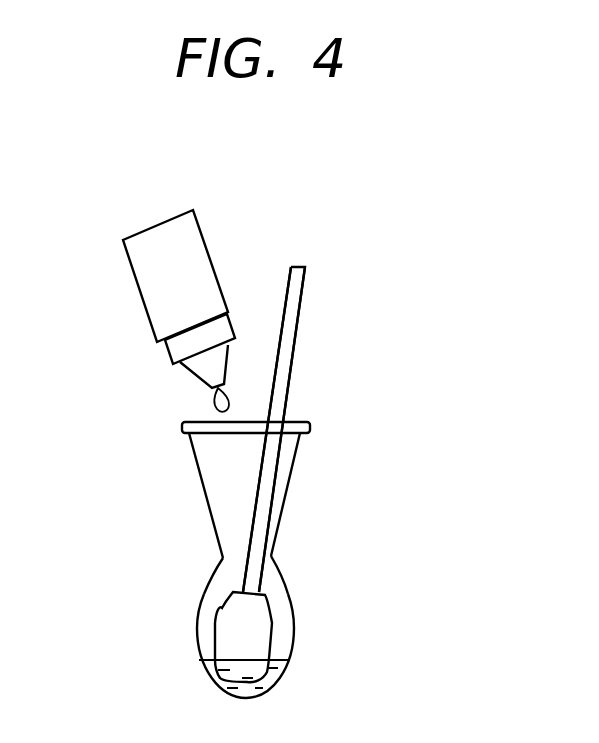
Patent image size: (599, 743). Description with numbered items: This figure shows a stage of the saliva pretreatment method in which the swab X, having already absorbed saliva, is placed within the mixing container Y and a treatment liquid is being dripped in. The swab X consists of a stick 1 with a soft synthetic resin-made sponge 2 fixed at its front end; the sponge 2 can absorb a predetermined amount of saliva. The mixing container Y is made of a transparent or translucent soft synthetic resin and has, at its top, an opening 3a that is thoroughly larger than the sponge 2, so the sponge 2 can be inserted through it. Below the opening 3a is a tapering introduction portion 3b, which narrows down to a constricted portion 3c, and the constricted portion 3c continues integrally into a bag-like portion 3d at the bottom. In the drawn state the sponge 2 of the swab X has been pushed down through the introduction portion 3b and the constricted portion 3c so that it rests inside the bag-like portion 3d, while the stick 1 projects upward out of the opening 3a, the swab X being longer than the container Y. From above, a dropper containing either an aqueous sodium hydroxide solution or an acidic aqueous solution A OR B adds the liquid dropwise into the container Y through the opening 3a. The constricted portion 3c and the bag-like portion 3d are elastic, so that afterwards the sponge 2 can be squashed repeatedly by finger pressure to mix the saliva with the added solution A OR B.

The stick 1 is at (300, 265).
The swab X is at (296, 347).
The soft synthetic resin-made sponge 2 is at (270, 648).
The opening 3a is at (288, 428).
The tapering introduction portion 3b is at (275, 488).
The constricted portion 3c is at (272, 553).
The bag-like portion 3d is at (278, 623).
The mixing container Y is at (292, 667).
The aqueous sodium hydroxide solution or acidic aqueous solution A OR B is at (155, 223).